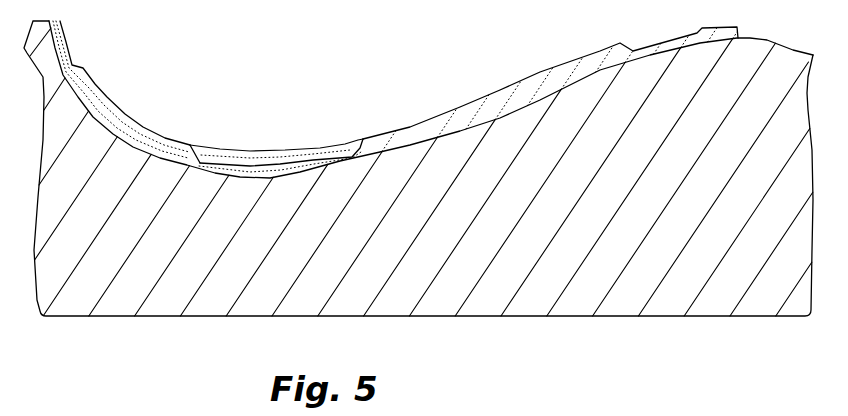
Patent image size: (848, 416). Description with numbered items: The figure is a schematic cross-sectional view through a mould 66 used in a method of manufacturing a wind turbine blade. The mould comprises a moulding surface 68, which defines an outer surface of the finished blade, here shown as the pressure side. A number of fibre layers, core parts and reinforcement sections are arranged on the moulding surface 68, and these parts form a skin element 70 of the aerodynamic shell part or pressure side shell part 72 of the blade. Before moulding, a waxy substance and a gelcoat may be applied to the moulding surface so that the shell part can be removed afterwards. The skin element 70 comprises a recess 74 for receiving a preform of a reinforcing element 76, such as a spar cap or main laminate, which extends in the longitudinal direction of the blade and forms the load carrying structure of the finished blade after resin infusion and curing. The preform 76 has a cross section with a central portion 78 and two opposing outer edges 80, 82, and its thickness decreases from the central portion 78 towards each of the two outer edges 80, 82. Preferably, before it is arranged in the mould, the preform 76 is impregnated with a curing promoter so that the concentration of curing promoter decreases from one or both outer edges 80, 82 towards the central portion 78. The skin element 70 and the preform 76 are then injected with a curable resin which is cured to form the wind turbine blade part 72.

The mould 66 is at (107, 295).
The moulding surface 68 is at (497, 117).
The skin element 70 is at (134, 117).
The pressure side shell part 72 is at (406, 99).
The recess 74 is at (334, 150).
The preform of reinforcing element 76 is at (234, 155).
The central portion 78 is at (273, 157).
The outer edge 80 is at (189, 143).
The outer edge 82 is at (360, 140).